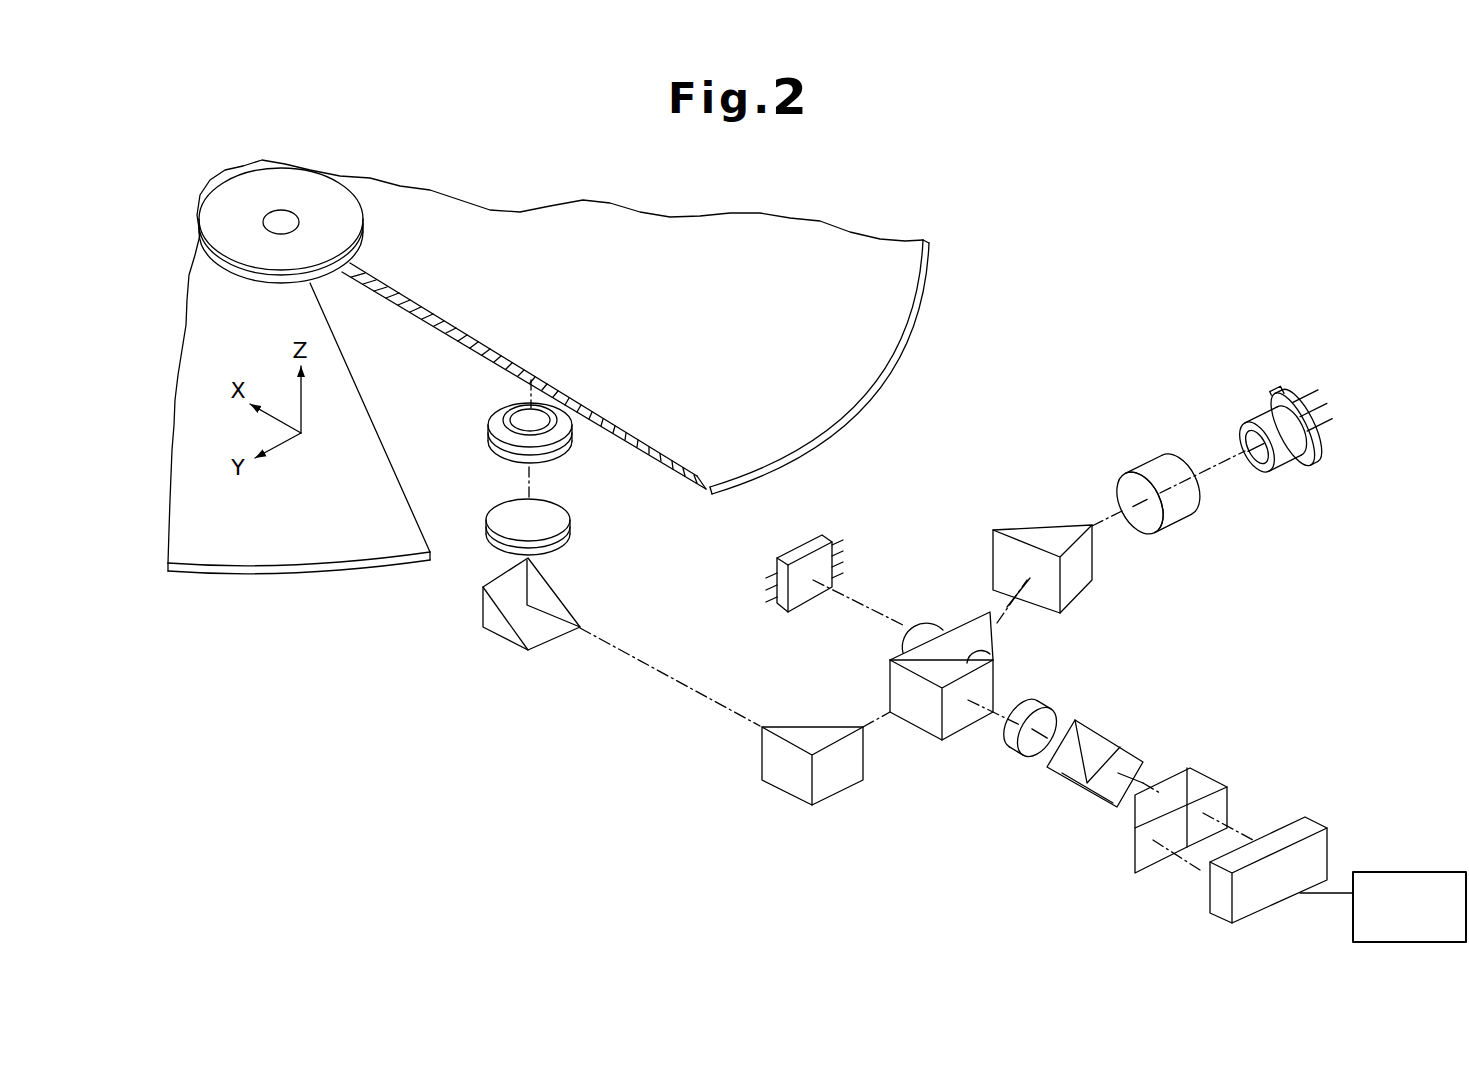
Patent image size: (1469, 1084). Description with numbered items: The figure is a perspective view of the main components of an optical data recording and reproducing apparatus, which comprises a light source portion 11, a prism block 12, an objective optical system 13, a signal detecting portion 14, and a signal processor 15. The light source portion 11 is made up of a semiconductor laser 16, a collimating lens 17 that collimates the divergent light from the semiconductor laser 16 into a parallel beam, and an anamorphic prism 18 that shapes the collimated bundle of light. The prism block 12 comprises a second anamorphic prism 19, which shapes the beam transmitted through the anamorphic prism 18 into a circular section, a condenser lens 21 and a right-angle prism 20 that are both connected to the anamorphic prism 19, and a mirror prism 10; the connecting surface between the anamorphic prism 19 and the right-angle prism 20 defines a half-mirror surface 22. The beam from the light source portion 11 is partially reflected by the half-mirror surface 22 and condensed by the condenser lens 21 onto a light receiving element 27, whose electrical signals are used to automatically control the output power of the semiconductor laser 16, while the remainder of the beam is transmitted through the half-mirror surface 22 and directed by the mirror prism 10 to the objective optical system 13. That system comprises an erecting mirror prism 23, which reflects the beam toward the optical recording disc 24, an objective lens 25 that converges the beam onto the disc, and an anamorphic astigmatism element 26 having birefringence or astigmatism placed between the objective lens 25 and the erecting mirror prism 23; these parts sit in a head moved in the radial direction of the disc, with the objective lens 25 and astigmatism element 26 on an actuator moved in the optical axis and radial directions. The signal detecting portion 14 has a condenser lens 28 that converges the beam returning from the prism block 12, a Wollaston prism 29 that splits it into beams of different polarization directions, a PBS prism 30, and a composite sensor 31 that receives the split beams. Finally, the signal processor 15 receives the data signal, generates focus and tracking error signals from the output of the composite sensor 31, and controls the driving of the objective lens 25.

The mirror prism 10 is at (786, 788).
The light source portion 11 is at (1268, 498).
The prism block 12 is at (866, 797).
The objective optical system 13 is at (458, 638).
The signal detecting portion 14 is at (1048, 815).
The signal processor 15 is at (1383, 871).
The semiconductor laser 16 is at (1278, 395).
The collimating lens 17 is at (1157, 462).
The anamorphic prism 18 is at (1043, 535).
The anamorphic prism 19 is at (968, 633).
The right-angle prism 20 is at (893, 688).
The condenser lens 21 is at (923, 627).
The half-mirror surface 22 is at (997, 662).
The erecting mirror prism 23 is at (510, 639).
The optical recording disc 24 is at (885, 352).
The objective lens 25 is at (558, 452).
The anamorphic astigmatism element 26 is at (572, 525).
The light receiving element 27 is at (820, 536).
The condenser lens 28 is at (1034, 705).
The Wollaston prism 29 is at (1115, 737).
The PBS prism 30 is at (1213, 783).
The composite sensor 31 is at (1300, 822).